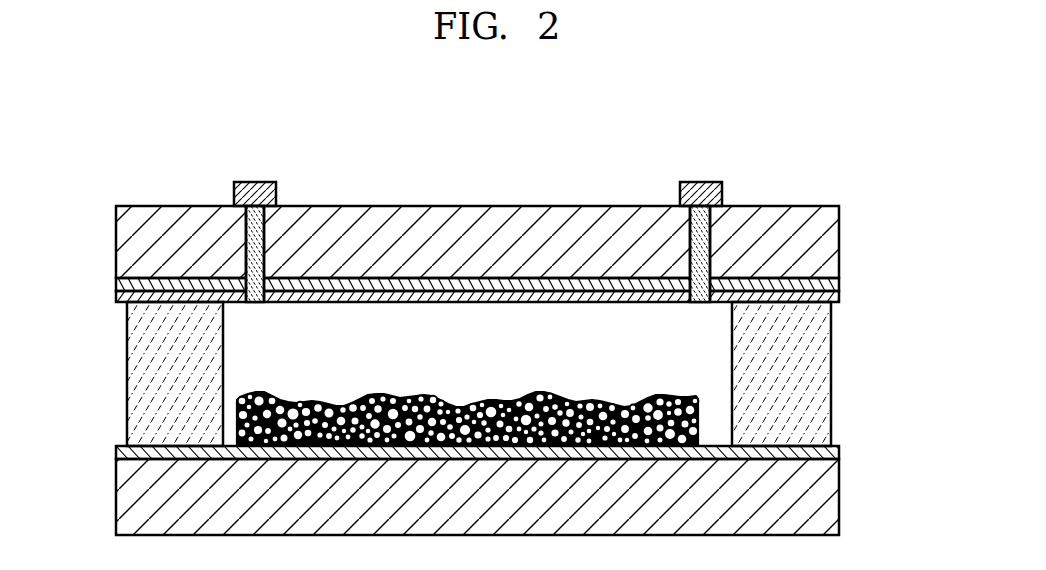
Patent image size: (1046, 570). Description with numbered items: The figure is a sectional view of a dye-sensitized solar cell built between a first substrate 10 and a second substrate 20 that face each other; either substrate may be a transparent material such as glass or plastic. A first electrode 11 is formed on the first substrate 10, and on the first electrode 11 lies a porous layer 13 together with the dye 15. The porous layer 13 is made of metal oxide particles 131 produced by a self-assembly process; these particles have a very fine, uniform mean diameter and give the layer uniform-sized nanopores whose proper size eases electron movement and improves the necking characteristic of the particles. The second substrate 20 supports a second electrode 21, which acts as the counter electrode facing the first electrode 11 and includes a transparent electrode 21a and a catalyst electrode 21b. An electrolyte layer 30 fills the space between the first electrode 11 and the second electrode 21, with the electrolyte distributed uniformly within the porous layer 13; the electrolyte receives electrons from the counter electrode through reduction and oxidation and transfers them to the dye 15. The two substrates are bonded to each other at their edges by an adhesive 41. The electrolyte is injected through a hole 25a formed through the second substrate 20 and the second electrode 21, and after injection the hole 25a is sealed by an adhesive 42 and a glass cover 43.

The first substrate 10 is at (835, 493).
The first electrode 11 is at (838, 452).
The porous layer 13 is at (475, 409).
The metal oxide particles 131 is at (235, 432).
The dye 15 is at (235, 406).
The second substrate 20 is at (839, 222).
The second electrode 21 is at (536, 288).
The transparent electrode 21a is at (840, 282).
The catalyst electrode 21b is at (840, 300).
The hole 25a is at (245, 266).
The electrolyte layer 30 is at (476, 318).
The adhesive 41 is at (822, 355).
The adhesive 42 is at (248, 238).
The glass cover 43 is at (254, 182).